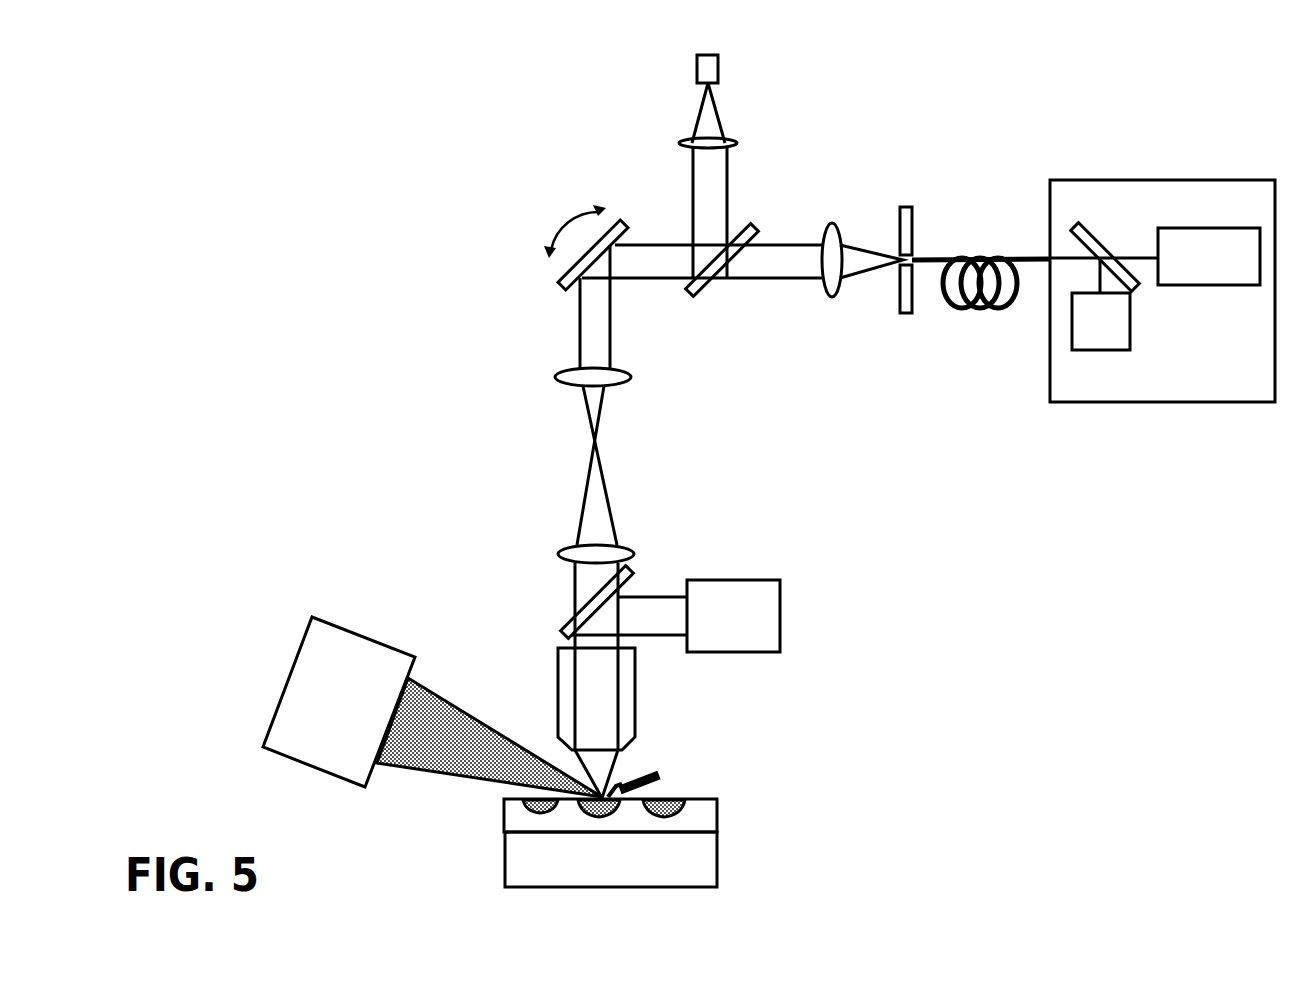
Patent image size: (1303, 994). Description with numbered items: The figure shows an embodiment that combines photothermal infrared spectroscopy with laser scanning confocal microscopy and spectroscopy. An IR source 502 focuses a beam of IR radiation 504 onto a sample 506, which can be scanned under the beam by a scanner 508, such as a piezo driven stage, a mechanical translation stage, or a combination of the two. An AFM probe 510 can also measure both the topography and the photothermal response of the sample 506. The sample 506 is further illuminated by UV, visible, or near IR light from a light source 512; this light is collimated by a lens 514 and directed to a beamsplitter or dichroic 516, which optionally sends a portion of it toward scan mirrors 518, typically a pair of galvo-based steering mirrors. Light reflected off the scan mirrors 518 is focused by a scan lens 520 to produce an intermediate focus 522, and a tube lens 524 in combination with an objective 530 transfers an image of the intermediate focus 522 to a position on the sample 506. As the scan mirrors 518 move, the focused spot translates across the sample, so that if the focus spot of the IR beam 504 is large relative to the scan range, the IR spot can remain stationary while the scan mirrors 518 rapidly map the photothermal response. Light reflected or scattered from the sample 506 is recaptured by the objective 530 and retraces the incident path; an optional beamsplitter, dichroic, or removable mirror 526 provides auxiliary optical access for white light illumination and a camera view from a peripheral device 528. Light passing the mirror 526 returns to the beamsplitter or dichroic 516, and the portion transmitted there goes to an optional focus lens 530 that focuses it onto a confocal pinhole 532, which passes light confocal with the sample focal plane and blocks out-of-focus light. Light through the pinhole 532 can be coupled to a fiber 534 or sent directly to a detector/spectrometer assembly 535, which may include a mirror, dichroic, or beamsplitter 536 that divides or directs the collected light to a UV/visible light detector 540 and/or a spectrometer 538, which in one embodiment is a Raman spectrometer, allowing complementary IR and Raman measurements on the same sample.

The IR source 502 is at (323, 702).
The beam of IR radiation 504 is at (489, 737).
The sample 506 is at (576, 816).
The scanner 508 is at (611, 859).
The AFM probe 510 is at (661, 777).
The light source 512 is at (730, 99).
The lens 514 is at (735, 204).
The beamsplitter or dichroic 516 is at (702, 280).
The scan mirrors 518 is at (565, 286).
The scan lens 520 is at (619, 381).
The intermediate focus 522 is at (617, 465).
The tube lens 524 is at (618, 596).
The beamsplitter/dichroic or removable mirror 526 is at (602, 602).
The peripheral device 528 is at (733, 616).
The objective 530 is at (730, 510).
The pinhole 532 is at (913, 281).
The fiber 534 is at (1035, 266).
The detector/spectrometer assembly 535 is at (1162, 267).
The mirror/dichroic/beamsplitter 536 is at (1105, 244).
The spectrometer 538 is at (1209, 245).
The UV/visible light detector 540 is at (1101, 341).